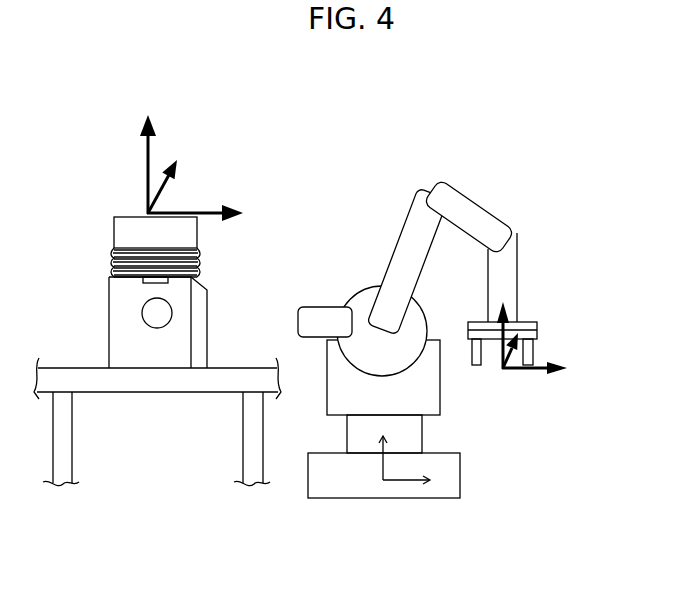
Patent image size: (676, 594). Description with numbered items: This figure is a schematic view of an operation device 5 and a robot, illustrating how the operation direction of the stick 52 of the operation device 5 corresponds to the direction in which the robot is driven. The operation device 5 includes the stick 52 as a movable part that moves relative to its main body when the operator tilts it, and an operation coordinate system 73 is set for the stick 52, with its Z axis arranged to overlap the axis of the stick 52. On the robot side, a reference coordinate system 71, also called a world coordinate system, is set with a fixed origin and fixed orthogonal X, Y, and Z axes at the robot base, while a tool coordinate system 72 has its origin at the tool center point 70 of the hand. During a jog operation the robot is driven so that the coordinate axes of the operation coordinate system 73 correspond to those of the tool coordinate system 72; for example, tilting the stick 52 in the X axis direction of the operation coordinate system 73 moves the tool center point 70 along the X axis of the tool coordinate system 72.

The operation device 5 is at (120, 300).
The stick 52 is at (118, 228).
The operation coordinate system 73 is at (150, 147).
The tool center point 70 is at (503, 372).
The tool coordinate system 72 is at (530, 372).
The reference coordinate system 71 is at (398, 481).